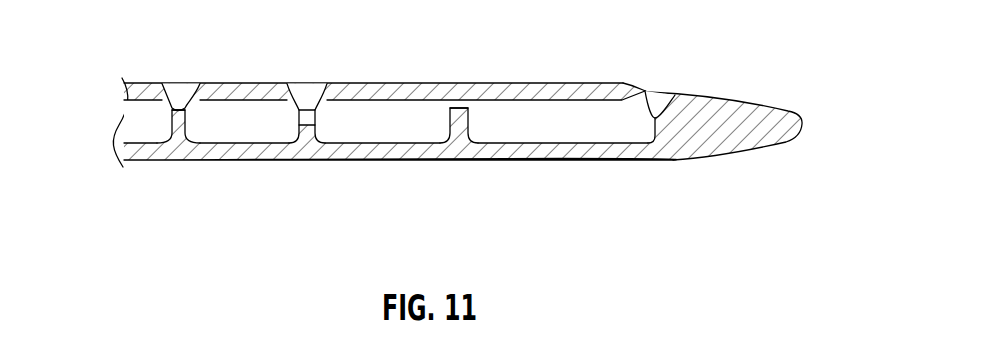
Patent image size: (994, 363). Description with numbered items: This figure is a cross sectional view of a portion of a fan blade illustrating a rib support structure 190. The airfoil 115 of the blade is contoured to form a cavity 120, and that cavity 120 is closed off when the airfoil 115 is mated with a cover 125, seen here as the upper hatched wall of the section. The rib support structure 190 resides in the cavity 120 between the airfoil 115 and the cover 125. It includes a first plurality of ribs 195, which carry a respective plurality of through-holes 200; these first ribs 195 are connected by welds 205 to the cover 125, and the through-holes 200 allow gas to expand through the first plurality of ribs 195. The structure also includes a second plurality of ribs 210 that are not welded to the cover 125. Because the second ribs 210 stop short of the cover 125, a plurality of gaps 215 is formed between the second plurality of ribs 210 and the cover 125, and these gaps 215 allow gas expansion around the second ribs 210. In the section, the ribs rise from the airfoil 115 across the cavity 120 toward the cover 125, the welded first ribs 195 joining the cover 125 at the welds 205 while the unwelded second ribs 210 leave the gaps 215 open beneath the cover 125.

The airfoil 115 is at (387, 158).
The cavity 120 is at (235, 124).
The cover 125 is at (425, 82).
The rib support structure 190 is at (180, 128).
The first plurality of ribs 195 is at (171, 128).
The through-holes 200 is at (318, 123).
The welds 205 is at (177, 87).
The second plurality of ribs 210 is at (462, 137).
The gaps 215 is at (467, 100).